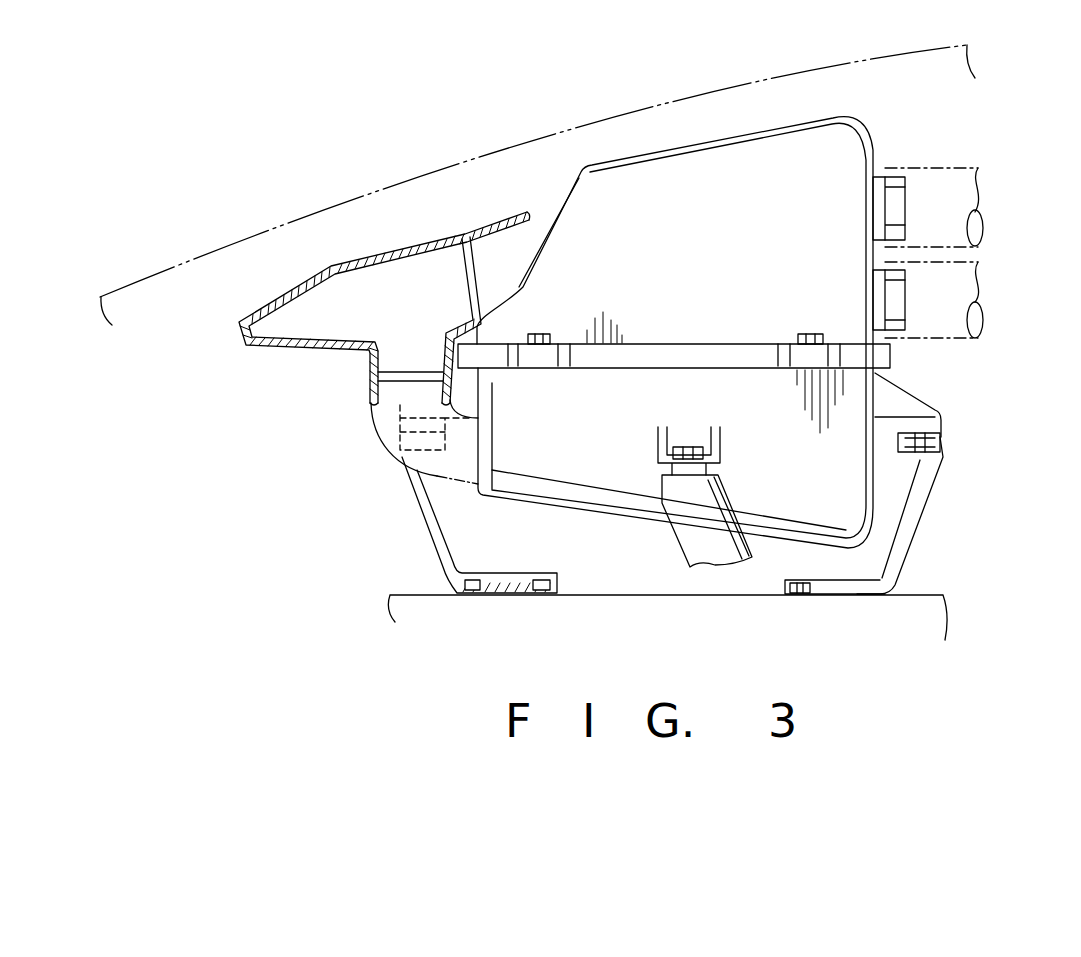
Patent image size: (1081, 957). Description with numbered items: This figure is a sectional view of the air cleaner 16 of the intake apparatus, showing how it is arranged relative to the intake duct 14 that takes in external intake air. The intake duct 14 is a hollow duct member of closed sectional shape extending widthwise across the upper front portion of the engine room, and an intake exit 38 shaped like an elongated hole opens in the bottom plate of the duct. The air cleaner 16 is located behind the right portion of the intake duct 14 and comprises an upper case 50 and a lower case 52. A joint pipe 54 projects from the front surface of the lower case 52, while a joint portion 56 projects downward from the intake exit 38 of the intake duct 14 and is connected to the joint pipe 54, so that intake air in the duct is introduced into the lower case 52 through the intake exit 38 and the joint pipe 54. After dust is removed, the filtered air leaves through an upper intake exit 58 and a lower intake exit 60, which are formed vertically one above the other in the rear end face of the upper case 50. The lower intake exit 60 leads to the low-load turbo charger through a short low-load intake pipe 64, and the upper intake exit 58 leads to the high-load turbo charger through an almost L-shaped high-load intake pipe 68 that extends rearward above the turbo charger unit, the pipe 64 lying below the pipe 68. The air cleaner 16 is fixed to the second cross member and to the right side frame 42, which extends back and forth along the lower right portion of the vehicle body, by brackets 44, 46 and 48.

The intake duct 14 is at (354, 244).
The air cleaner 16 is at (879, 147).
The intake exit 38 is at (423, 350).
The right side frame 42 is at (920, 607).
The bracket 44 is at (720, 437).
The bracket 46 is at (443, 385).
The bracket 48 is at (903, 403).
The upper case 50 is at (688, 147).
The lower case 52 is at (575, 495).
The joint pipe 54 is at (390, 450).
The joint portion 56 is at (371, 360).
The upper intake exit 58 is at (878, 215).
The lower intake exit 60 is at (878, 302).
The low-load intake pipe 64 is at (970, 300).
The high-load intake pipe 68 is at (970, 180).